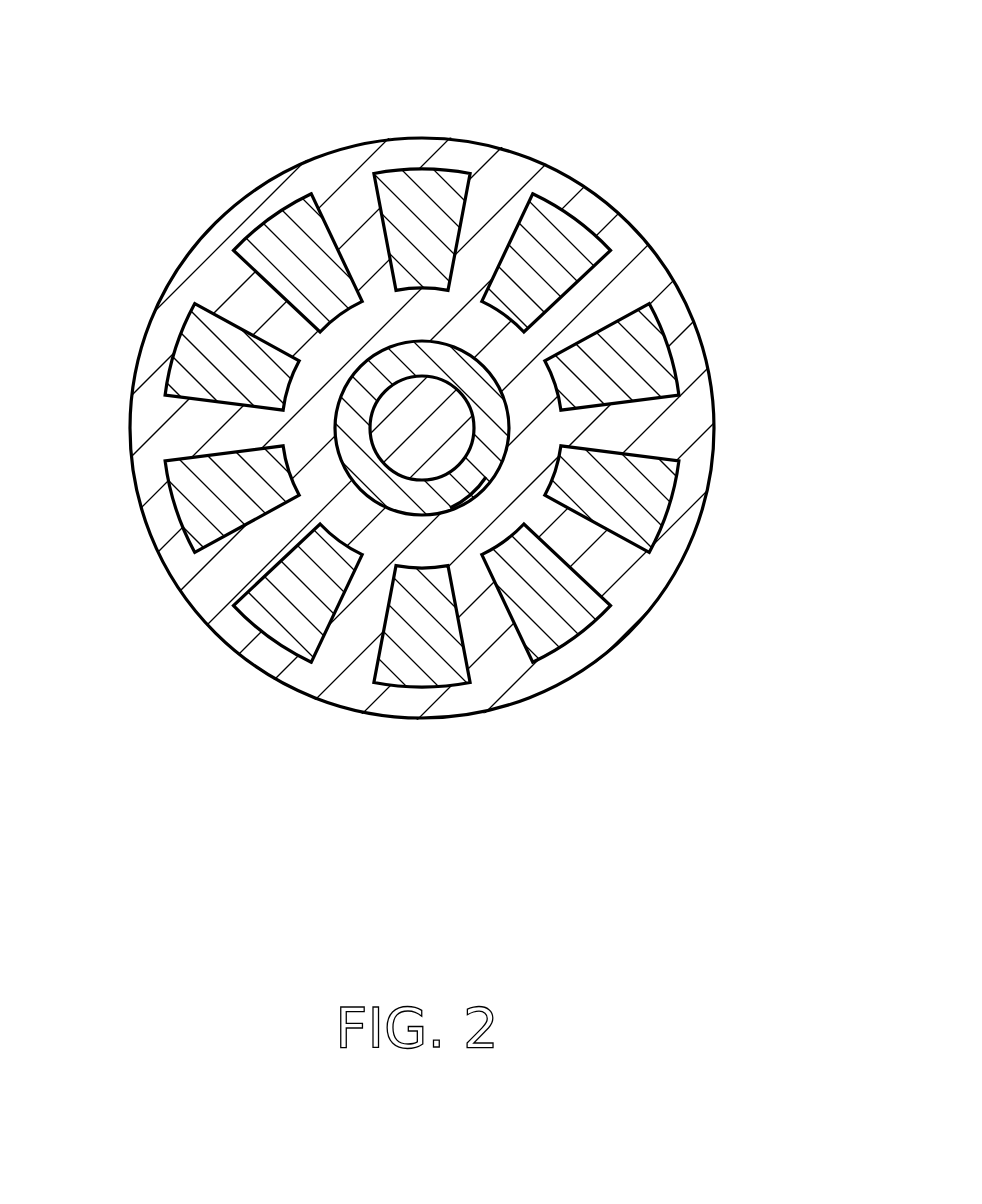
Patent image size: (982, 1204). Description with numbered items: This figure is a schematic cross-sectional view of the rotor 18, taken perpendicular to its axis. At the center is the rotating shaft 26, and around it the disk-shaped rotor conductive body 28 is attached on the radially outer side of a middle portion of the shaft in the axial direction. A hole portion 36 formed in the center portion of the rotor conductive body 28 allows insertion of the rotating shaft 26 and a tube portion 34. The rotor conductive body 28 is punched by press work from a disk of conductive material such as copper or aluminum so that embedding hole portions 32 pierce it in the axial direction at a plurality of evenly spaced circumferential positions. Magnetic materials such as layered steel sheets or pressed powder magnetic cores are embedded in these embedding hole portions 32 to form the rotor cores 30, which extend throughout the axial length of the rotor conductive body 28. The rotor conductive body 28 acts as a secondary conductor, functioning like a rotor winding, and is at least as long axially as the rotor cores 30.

The rotor 18 is at (491, 419).
The rotating shaft 26 is at (433, 415).
The rotor conductive body 28 is at (687, 420).
The rotor core 30 is at (298, 230).
The embedding hole portion 32 is at (566, 267).
The tube portion 34 is at (443, 363).
The hole portion 36 is at (488, 478).